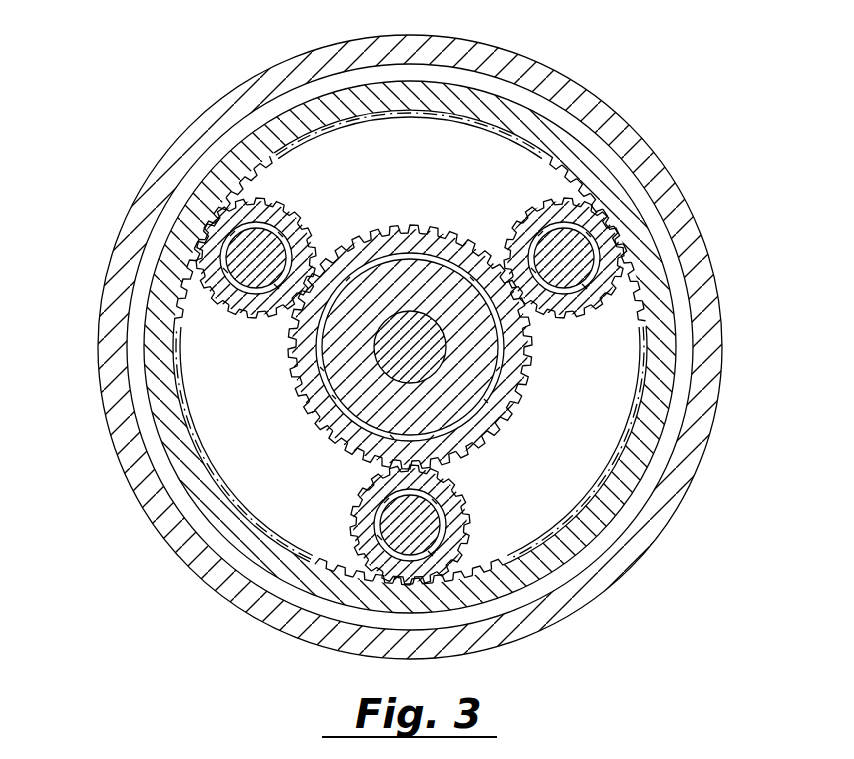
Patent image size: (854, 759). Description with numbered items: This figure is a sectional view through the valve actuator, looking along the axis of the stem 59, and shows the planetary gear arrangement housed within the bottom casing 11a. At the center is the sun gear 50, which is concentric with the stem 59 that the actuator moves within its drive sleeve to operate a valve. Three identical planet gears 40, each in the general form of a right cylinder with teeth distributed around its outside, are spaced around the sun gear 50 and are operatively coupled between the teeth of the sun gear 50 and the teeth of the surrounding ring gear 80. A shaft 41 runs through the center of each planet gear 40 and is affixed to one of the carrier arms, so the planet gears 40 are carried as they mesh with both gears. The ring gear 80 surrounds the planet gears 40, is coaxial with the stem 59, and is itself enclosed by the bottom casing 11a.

The bottom casing 11a is at (183, 548).
The ring gear 80 is at (662, 290).
The sun gear 50 is at (500, 400).
The stem 59 is at (403, 353).
The planet gear 40 is at (551, 186).
The shaft 41 is at (295, 237).